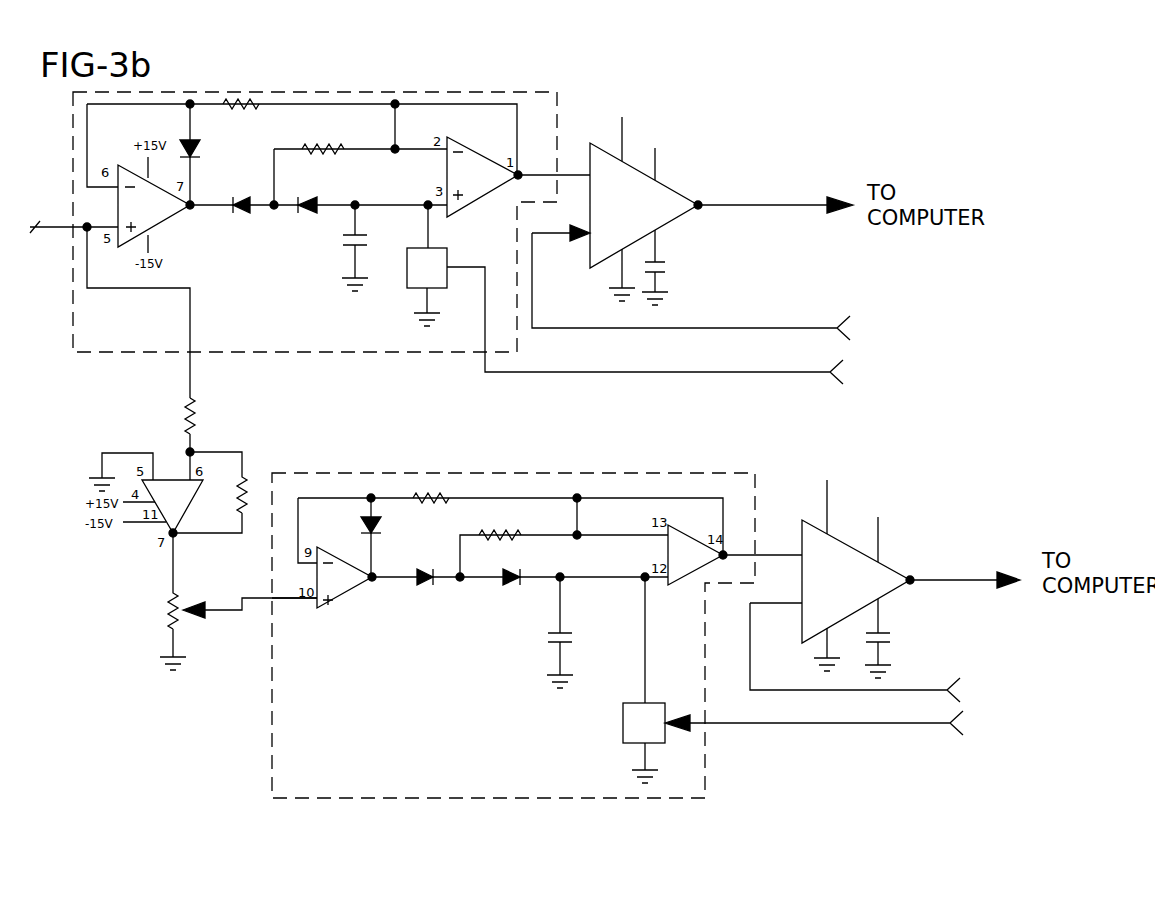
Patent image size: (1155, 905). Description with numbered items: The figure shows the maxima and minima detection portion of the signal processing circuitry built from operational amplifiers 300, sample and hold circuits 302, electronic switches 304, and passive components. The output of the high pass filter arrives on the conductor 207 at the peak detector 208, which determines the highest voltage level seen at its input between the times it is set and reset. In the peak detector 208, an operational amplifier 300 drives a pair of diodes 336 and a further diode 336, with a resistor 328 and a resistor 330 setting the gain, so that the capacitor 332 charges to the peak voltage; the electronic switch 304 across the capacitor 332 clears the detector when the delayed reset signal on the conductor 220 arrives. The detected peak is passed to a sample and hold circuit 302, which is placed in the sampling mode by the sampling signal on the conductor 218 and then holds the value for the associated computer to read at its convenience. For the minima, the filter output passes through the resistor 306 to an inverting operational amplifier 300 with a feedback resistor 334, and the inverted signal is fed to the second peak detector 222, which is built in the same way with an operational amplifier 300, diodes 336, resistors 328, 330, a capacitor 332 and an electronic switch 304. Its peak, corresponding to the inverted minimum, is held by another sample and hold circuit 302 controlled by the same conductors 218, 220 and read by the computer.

The conductor 207 is at (37, 225).
The peak detector 208 is at (125, 355).
The conductor 218 is at (738, 328).
The conductor 220 is at (735, 372).
The peak detector 222 is at (272, 716).
The operational amplifier 300 is at (160, 222).
The sample and hold circuit 302 is at (682, 216).
The electronic switch 304 is at (407, 276).
The resistor 306 is at (195, 406).
The resistor 328 is at (250, 108).
The resistor 330 is at (330, 147).
The capacitor 332 is at (342, 240).
The resistor 334 is at (250, 490).
The diode 336 is at (180, 140).